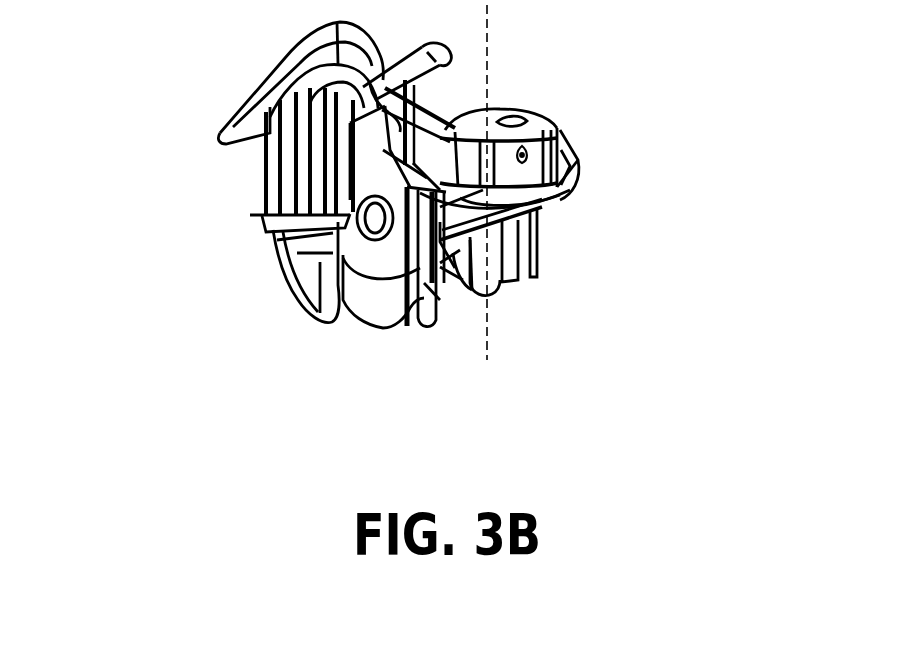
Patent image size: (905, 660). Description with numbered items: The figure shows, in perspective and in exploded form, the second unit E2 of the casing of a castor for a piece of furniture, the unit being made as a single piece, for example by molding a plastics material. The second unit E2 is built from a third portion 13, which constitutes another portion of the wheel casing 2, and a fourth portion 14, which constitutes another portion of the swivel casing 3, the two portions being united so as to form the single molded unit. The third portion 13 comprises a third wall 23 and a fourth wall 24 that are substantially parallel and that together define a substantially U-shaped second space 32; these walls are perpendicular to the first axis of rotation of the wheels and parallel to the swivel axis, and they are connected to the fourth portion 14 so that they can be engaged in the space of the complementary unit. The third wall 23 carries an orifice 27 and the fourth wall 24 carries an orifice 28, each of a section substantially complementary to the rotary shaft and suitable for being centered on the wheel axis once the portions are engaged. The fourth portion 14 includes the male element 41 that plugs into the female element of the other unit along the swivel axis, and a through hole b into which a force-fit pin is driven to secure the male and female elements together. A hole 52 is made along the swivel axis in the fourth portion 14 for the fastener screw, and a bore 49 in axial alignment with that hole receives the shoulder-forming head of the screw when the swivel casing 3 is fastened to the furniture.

The wheel casing 2 is at (240, 237).
The swivel casing 3 is at (605, 192).
The third portion 13 is at (360, 246).
The fourth portion 14 is at (545, 200).
The third wall 23 is at (365, 292).
The fourth wall 24 is at (490, 280).
The orifice 27 is at (265, 216).
The orifice 28 is at (568, 232).
The second space 32 is at (453, 312).
The male element 41 is at (562, 133).
The bore 49 is at (472, 290).
The hole 52 is at (534, 99).
The through hole b is at (560, 143).
The second unit E2 is at (158, 387).